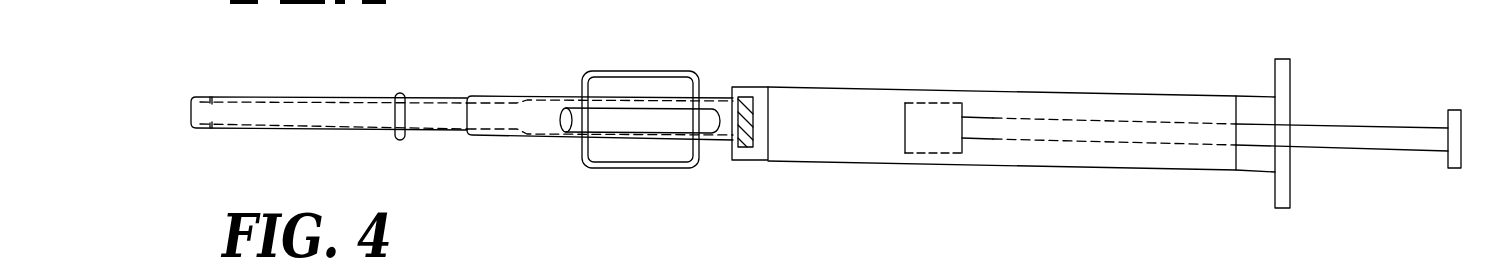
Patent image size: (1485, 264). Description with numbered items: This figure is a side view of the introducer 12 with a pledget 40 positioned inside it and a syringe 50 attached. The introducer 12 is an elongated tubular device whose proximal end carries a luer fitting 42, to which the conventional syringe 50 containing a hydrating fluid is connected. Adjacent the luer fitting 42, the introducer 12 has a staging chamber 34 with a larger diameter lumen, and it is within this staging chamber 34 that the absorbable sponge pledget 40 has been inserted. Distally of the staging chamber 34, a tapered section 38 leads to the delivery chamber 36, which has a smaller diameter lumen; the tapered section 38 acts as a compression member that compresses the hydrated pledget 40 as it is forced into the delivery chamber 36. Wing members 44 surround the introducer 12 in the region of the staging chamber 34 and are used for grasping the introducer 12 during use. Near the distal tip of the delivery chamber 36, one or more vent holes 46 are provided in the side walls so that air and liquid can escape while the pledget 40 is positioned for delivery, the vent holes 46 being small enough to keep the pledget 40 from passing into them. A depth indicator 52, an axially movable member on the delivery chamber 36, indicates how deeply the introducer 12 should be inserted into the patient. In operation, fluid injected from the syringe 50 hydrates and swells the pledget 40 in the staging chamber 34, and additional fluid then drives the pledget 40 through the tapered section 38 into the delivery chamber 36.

The introducer 12 is at (538, 60).
The staging chamber 34 is at (546, 127).
The delivery chamber 36 is at (317, 119).
The tapered section 38 is at (525, 134).
The pledget 40 is at (684, 124).
The luer fitting 42 is at (740, 148).
The wing members 44 is at (631, 168).
The vent holes 46 is at (213, 98).
The syringe 50 is at (1052, 65).
The depth indicator 52 is at (399, 93).